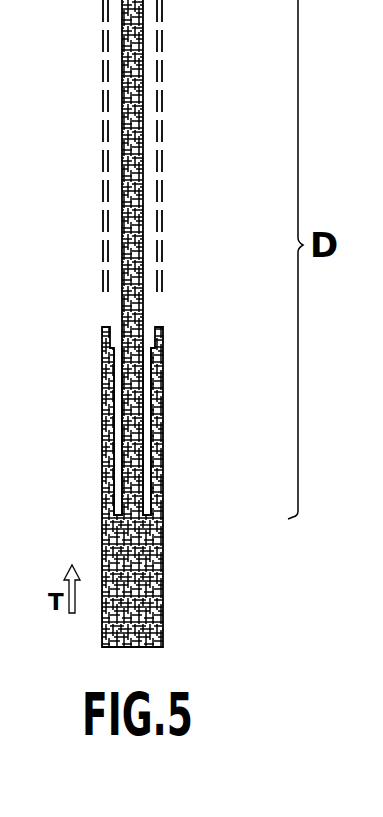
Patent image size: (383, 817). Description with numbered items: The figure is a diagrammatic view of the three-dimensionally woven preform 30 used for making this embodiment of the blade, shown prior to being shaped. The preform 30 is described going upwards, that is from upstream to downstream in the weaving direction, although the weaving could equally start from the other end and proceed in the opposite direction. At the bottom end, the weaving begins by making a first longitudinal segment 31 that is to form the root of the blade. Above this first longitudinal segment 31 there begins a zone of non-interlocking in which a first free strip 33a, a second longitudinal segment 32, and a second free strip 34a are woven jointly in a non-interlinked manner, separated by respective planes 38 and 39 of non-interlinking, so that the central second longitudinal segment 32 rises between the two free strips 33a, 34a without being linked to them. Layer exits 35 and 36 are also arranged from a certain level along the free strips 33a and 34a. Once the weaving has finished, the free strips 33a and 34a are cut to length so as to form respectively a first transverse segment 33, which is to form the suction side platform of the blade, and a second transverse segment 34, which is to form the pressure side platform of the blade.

The three-dimensionally woven preform 30 is at (186, 120).
The first longitudinal segment 31 is at (163, 605).
The second longitudinal segment 32 is at (143, 72).
The first transverse segment 33 is at (163, 484).
The second transverse segment 34 is at (102, 484).
The first free strip 33a is at (165, 196).
The second free strip 34a is at (101, 196).
The layer exit 35 is at (157, 343).
The layer exit 36 is at (108, 343).
The plane of non-interlinking 38 is at (147, 452).
The plane of non-interlinking 39 is at (118, 452).